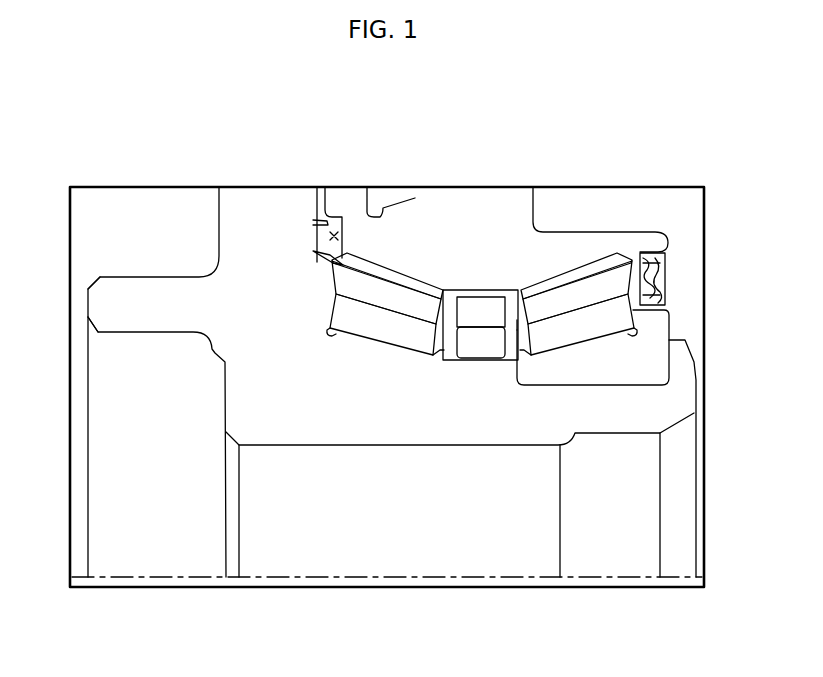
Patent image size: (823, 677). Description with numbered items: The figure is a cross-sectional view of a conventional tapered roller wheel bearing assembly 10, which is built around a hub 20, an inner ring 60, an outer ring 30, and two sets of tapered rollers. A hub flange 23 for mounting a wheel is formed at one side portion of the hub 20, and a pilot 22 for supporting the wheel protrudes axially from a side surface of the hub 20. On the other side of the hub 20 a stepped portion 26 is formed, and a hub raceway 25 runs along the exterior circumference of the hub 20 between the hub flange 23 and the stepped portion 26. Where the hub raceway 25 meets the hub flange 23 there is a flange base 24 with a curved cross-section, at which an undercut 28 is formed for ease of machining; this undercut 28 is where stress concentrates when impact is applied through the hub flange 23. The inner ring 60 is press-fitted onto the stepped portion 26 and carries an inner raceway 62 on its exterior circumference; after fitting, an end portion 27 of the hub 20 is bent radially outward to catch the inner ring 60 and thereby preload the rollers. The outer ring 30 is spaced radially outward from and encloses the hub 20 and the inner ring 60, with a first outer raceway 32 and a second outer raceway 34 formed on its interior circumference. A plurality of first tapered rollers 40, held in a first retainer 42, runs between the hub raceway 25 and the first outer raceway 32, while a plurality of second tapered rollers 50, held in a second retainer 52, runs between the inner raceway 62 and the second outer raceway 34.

The tapered roller wheel bearing assembly 10 is at (156, 148).
The hub 20 is at (334, 382).
The pilot 22 is at (52, 304).
The hub flange 23 is at (280, 180).
The flange base 24 is at (315, 203).
The hub raceway 25 is at (427, 473).
The stepped portion 26 is at (543, 520).
The end portion 27 is at (720, 458).
The undercut 28 is at (312, 491).
The outer ring 30 is at (496, 177).
The first outer raceway 32 is at (387, 200).
The second outer raceway 34 is at (576, 205).
The first tapered rollers 40 is at (387, 474).
The first retainer 42 is at (386, 458).
The second tapered rollers 50 is at (578, 458).
The second retainer 52 is at (705, 279).
The inner ring 60 is at (646, 347).
The inner raceway 62 is at (592, 489).